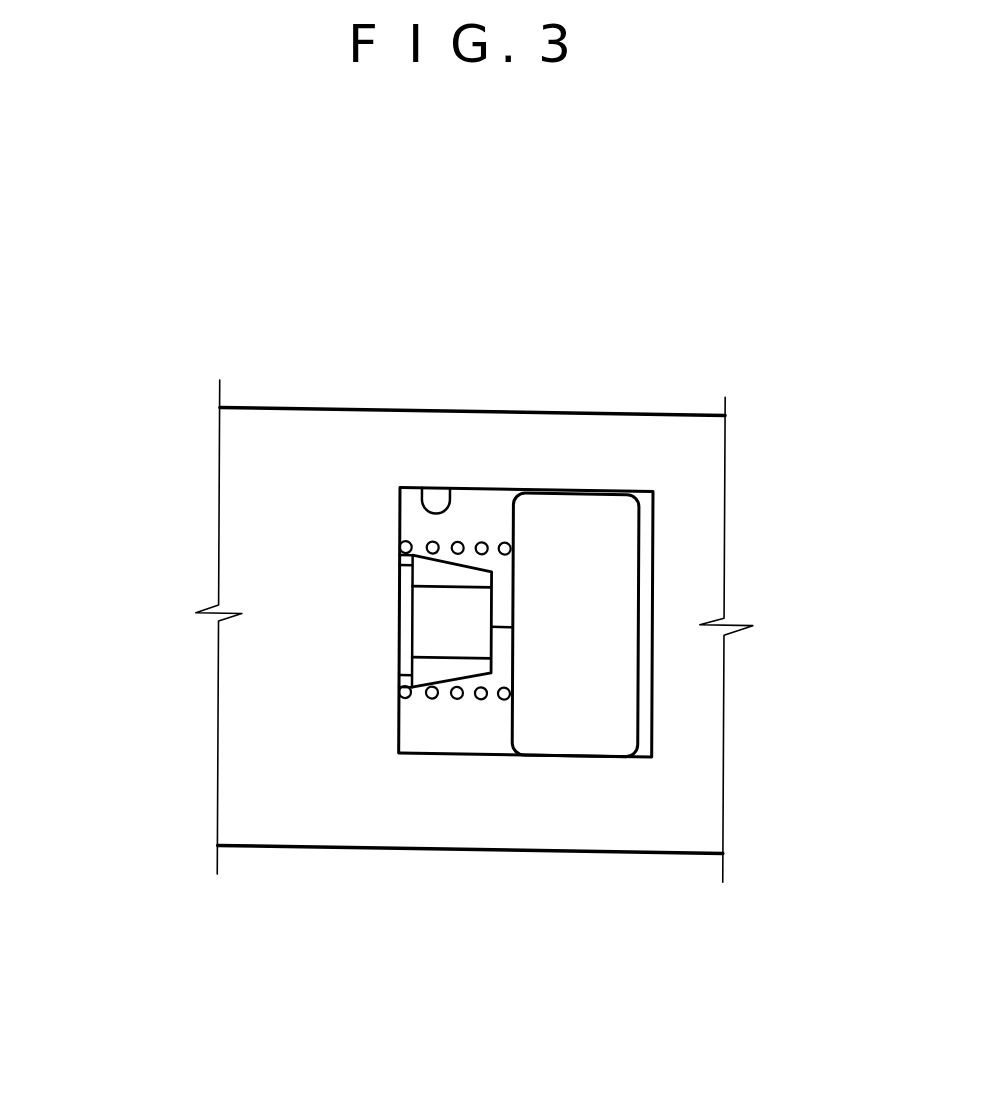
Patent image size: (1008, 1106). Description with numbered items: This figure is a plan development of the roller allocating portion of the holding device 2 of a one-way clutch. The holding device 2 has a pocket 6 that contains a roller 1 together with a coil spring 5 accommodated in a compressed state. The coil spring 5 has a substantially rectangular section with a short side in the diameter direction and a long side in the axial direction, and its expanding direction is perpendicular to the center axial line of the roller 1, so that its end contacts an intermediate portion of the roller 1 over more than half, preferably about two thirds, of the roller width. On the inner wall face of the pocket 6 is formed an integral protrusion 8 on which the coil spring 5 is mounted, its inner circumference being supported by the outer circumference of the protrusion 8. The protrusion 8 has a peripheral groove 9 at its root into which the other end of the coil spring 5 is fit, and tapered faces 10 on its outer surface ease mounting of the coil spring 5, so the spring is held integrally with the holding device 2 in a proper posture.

The roller 1 is at (605, 590).
The holding device 2 is at (492, 410).
The coil spring 5 is at (482, 699).
The pocket 6 is at (420, 487).
The protrusion 8 is at (513, 627).
The peripheral groove 9 is at (405, 657).
The tapered face 10 is at (442, 675).